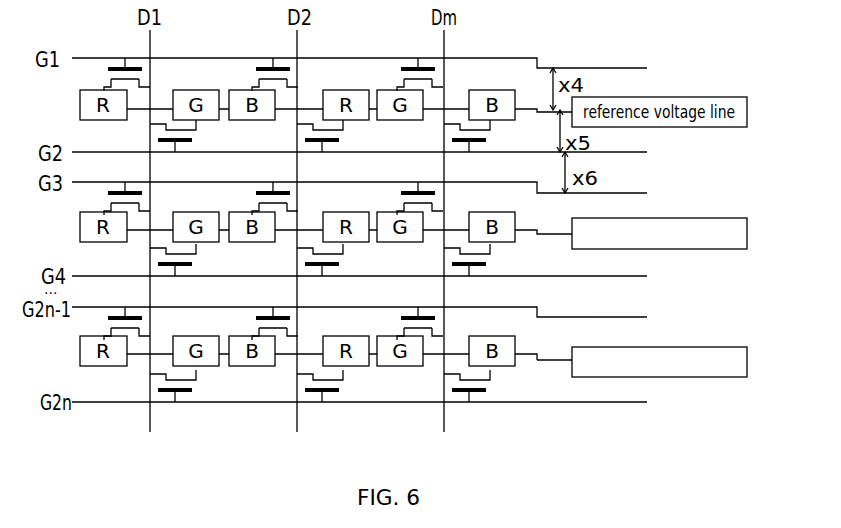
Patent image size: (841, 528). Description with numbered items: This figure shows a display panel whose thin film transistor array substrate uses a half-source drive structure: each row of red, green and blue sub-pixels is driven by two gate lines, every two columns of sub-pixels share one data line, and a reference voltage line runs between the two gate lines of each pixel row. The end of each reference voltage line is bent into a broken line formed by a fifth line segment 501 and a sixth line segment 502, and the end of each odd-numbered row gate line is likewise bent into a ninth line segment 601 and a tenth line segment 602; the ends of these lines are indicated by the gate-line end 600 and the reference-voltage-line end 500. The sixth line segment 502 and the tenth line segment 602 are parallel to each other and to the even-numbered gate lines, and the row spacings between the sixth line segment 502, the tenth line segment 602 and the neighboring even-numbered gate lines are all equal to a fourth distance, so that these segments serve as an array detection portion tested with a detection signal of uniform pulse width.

The first gate line 600 is at (540, 68).
The reference voltage line 500 is at (540, 233).
The ninth line segment 601 is at (538, 307).
The tenth line segment 602 is at (587, 317).
The fifth line segment 501 is at (538, 355).
The sixth line segment 502 is at (555, 360).